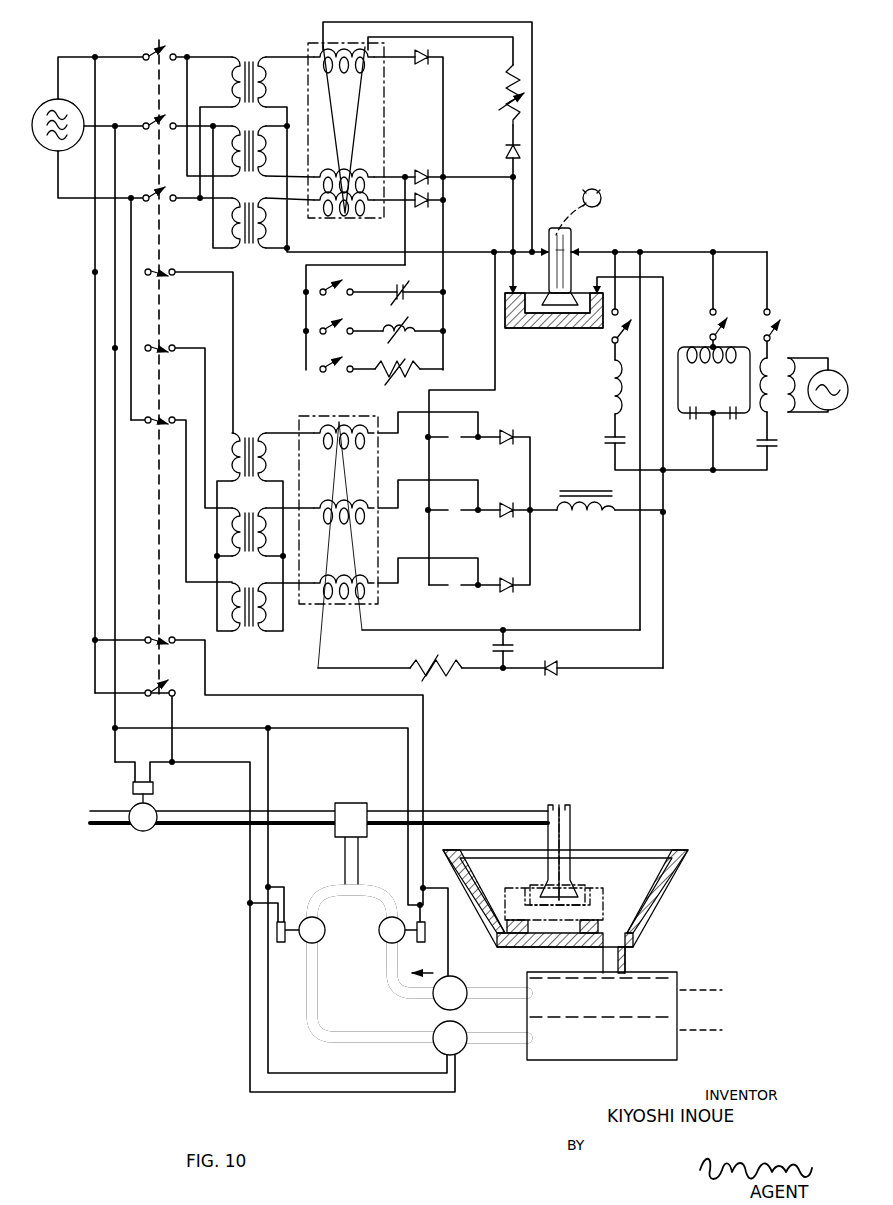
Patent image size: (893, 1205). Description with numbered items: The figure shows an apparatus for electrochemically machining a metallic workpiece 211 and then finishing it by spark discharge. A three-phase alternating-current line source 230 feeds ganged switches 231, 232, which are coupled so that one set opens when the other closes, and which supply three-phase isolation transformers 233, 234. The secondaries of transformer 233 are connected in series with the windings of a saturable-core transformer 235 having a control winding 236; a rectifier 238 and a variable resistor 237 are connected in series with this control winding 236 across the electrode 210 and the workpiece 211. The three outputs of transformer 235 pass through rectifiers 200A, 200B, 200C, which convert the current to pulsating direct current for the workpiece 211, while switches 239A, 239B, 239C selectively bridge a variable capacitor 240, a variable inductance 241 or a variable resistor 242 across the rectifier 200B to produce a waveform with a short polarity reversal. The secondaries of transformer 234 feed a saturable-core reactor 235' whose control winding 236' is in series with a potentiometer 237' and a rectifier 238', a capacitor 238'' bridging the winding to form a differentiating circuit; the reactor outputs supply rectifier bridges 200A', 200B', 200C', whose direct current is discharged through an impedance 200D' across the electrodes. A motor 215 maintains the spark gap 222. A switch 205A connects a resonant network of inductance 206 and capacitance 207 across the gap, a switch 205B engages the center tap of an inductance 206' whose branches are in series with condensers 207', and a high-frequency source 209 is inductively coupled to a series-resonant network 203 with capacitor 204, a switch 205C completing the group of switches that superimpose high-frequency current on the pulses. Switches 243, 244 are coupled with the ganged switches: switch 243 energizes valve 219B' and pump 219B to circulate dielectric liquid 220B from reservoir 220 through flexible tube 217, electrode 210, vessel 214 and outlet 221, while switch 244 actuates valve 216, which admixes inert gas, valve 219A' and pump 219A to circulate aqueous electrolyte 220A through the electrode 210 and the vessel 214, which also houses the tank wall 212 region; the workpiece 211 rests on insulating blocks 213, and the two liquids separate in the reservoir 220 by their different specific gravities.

The rectifier 200A is at (415, 72).
The rectifier 200B is at (412, 161).
The rectifier 200C is at (454, 213).
The rectifier bridge 200A' is at (543, 594).
The rectifier bridge 200B' is at (496, 526).
The rectifier bridge 200C' is at (516, 423).
The impedance 200D' is at (586, 520).
The series-resonant network 203 is at (786, 420).
The capacitor 204 is at (780, 446).
The switch 205A is at (613, 326).
The switch 205B is at (712, 333).
The switch 205C is at (778, 326).
The inductance 206 is at (593, 387).
The inductance 206' is at (714, 380).
The capacitance 207 is at (594, 425).
The condensers 207' is at (713, 402).
The source of high-frequency alternating current 209 is at (842, 368).
The electrode 210 is at (571, 240).
The workpiece 211 is at (553, 330).
The tank 212 is at (630, 910).
The insulating blocks 213 is at (603, 928).
The vessel 214 is at (633, 940).
The motor 215 is at (603, 194).
The electromagnetically controlled valve 216 is at (134, 826).
The flexible tube 217 is at (428, 813).
The pump 219A is at (473, 1044).
The pump 219B is at (476, 985).
The electromagnetically controlled valve 219A' is at (324, 953).
The electromagnetic valve 219B' is at (382, 940).
The reservoir 220 is at (545, 1062).
The aqueous electrolyte 220A is at (680, 1048).
The dielectric liquid 220B is at (680, 1010).
The outlet 221 is at (627, 953).
The gap 222 is at (575, 895).
The three-phase alternating-current line source 230 is at (40, 150).
The ganged switches 231 is at (162, 40).
The ganged switches 232 is at (160, 427).
The three-phase isolation transformer 233 is at (250, 52).
The three-phase isolation transformer 234 is at (268, 418).
The saturable-core transformer 235 is at (331, 146).
The saturable-core reactor 235' is at (312, 545).
The control winding 236 is at (330, 116).
The control winding 236' is at (364, 520).
The variable resistor 237 is at (544, 95).
The potentiometer 237' is at (449, 679).
The rectifier 238 is at (547, 149).
The rectifier 238' is at (574, 682).
The capacitor 238'' is at (526, 643).
The switch 239A is at (318, 286).
The switch 239B is at (318, 325).
The switch 239C is at (318, 365).
The variable capacitor 240 is at (410, 286).
The variable inductance 241 is at (420, 322).
The variable resistor 242 is at (420, 362).
The switch 243 is at (160, 637).
The switch 244 is at (160, 690).